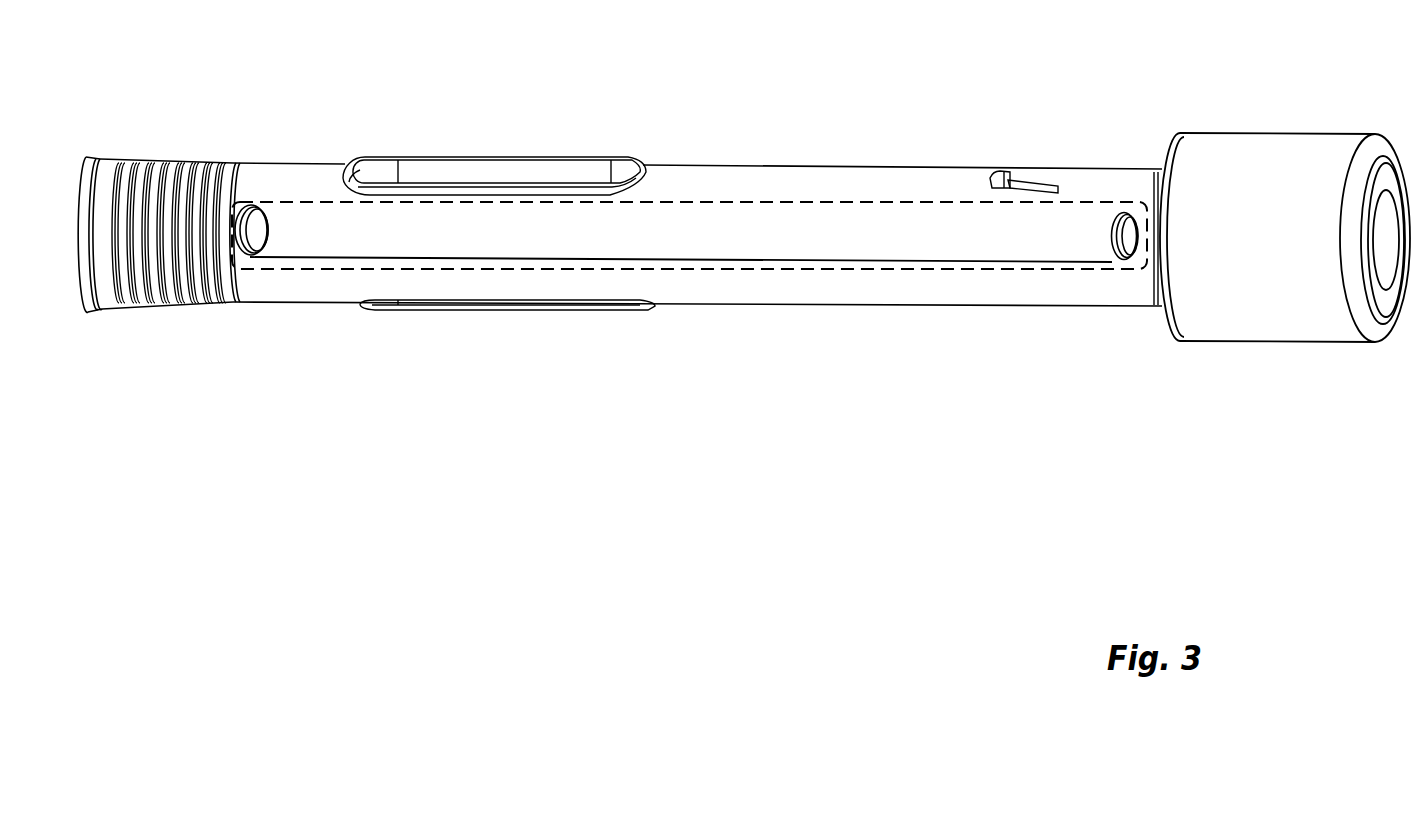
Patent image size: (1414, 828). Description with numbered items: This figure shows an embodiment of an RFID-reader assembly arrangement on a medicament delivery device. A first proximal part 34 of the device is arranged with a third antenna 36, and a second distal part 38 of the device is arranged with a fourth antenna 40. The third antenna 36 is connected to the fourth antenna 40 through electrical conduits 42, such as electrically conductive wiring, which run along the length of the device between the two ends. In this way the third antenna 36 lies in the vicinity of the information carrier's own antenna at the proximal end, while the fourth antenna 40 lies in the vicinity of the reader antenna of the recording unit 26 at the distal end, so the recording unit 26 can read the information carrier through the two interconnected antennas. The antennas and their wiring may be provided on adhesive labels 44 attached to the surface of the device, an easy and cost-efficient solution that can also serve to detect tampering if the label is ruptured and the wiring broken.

The recording unit 26 is at (1225, 249).
The first proximal part 34 is at (180, 130).
The third antenna 36 is at (252, 255).
The second distal part 38 is at (1060, 130).
The fourth antenna 40 is at (1122, 260).
The electrical conduits 42 is at (746, 258).
The adhesive labels 44 is at (695, 208).